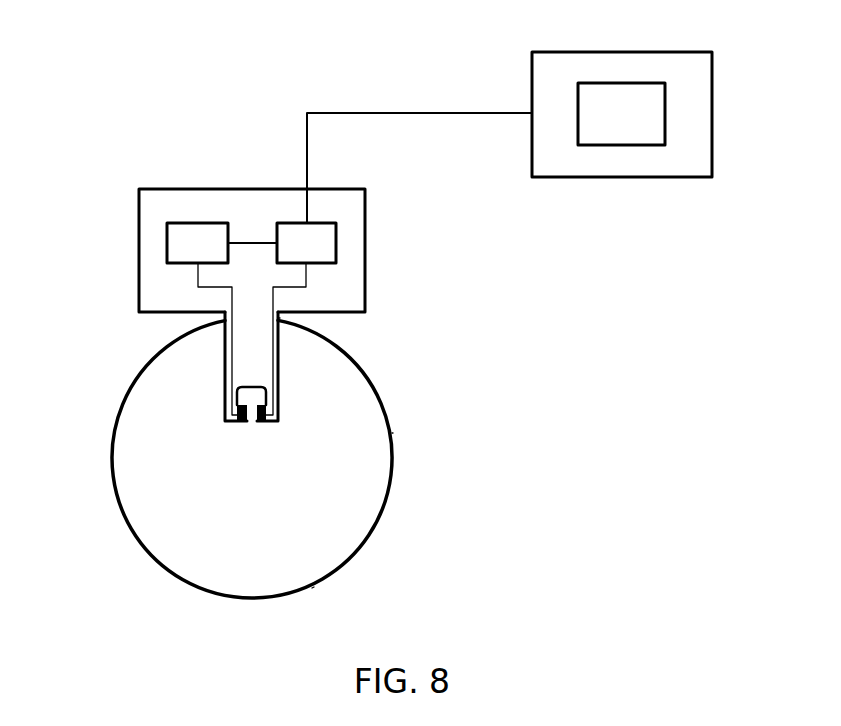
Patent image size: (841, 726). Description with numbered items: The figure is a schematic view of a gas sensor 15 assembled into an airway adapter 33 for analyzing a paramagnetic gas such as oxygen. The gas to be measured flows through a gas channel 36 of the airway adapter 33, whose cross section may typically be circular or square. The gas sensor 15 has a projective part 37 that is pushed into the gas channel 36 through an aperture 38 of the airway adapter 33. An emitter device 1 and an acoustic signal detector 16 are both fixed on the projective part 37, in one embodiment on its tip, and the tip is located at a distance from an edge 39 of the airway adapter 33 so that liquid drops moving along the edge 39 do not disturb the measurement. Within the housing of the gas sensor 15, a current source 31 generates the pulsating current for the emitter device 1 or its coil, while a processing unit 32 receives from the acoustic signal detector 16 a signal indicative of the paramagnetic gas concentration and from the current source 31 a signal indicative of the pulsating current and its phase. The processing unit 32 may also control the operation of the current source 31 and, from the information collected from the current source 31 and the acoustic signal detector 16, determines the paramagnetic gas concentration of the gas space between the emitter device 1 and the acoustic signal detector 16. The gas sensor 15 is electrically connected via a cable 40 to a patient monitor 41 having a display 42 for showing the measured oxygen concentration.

The emitter device 1 is at (240, 423).
The gas sensor 15 is at (290, 386).
The acoustic signal detector 16 is at (262, 423).
The current source 31 is at (167, 243).
The processing unit 32 is at (336, 243).
The airway adapter 33 is at (399, 431).
The gas channel 36 is at (143, 448).
The projective part 37 is at (225, 357).
The aperture 38 is at (280, 318).
The edge 39 is at (314, 587).
The cable 40 is at (415, 113).
The patient monitor 41 is at (622, 177).
The display 42 is at (665, 113).